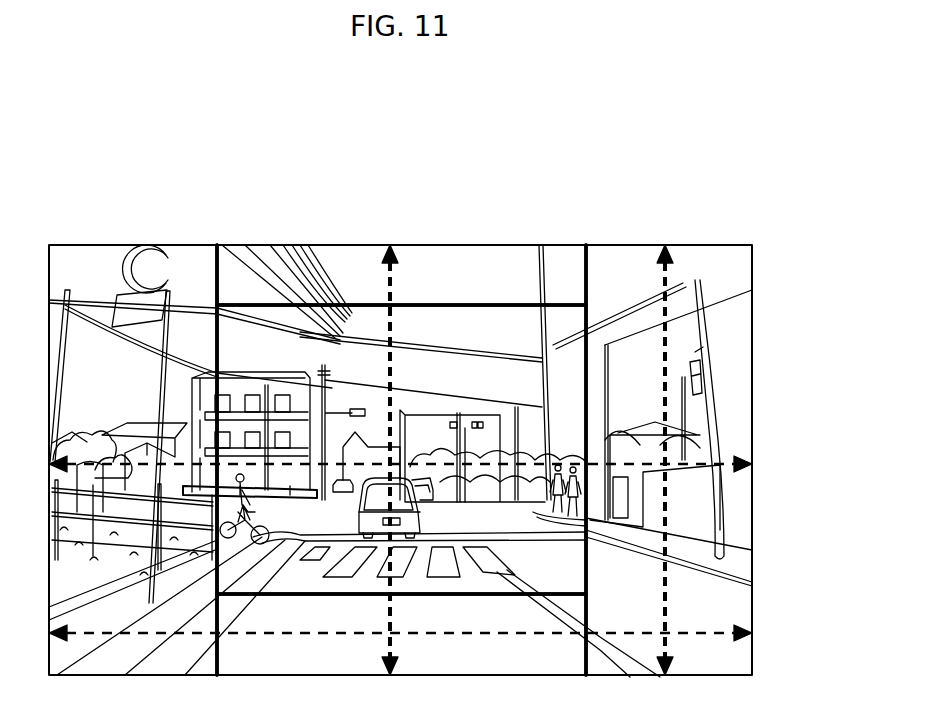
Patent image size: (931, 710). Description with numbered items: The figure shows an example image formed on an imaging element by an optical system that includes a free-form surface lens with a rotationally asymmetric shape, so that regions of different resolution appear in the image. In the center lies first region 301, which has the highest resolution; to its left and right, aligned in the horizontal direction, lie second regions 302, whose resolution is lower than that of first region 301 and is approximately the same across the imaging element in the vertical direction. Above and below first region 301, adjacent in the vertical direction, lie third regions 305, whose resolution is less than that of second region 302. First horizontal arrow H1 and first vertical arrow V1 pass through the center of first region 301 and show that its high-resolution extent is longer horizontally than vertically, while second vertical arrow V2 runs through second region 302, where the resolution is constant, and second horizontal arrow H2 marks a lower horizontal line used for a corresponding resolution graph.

The first region 301 is at (551, 353).
The second region 302 is at (207, 284).
The third region 305 is at (551, 285).
The first vertical arrow V1 is at (390, 245).
The second vertical arrow V2 is at (665, 245).
The first horizontal arrow H1 is at (752, 464).
The second horizontal arrow H2 is at (752, 633).